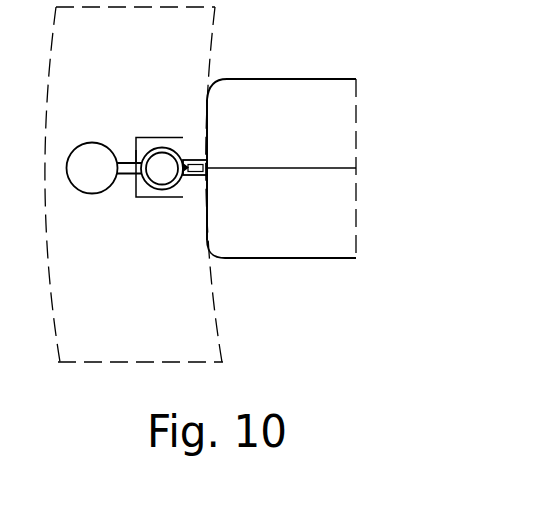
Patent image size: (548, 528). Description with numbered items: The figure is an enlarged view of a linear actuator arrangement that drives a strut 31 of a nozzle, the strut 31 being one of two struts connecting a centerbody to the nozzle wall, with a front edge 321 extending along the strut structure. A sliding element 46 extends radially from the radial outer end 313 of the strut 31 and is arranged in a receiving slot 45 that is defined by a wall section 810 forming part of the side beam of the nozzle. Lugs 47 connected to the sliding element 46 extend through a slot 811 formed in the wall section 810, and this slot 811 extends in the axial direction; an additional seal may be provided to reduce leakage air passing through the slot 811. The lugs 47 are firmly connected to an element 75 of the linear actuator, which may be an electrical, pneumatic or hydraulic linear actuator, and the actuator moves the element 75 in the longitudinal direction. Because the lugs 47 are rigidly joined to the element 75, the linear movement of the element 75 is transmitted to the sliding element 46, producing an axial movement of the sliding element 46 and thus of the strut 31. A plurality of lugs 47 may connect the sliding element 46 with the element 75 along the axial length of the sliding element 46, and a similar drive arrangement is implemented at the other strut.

The strut 31 is at (262, 243).
The radial outer end of the strut 313 is at (210, 222).
The front edge of the strut 321 is at (340, 168).
The element of the linear actuator 75 is at (92, 193).
The lugs 47 is at (127, 174).
The receiving slot 45 is at (143, 197).
The wall section 810 is at (131, 158).
The slot 811 is at (132, 157).
The sliding element 46 is at (188, 157).